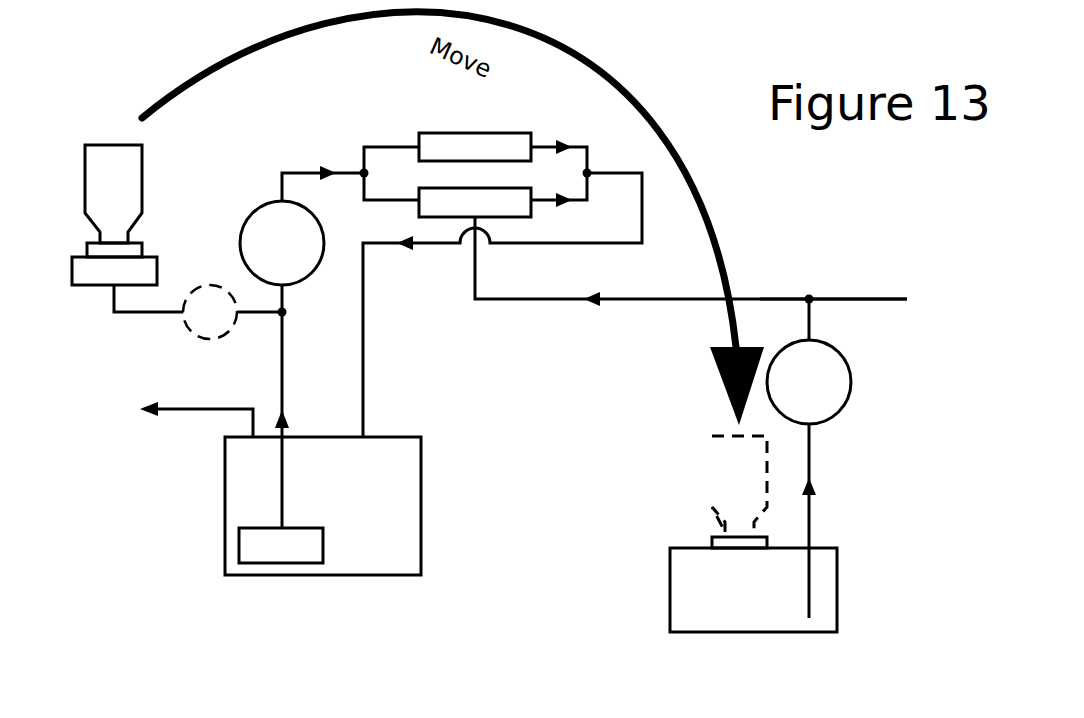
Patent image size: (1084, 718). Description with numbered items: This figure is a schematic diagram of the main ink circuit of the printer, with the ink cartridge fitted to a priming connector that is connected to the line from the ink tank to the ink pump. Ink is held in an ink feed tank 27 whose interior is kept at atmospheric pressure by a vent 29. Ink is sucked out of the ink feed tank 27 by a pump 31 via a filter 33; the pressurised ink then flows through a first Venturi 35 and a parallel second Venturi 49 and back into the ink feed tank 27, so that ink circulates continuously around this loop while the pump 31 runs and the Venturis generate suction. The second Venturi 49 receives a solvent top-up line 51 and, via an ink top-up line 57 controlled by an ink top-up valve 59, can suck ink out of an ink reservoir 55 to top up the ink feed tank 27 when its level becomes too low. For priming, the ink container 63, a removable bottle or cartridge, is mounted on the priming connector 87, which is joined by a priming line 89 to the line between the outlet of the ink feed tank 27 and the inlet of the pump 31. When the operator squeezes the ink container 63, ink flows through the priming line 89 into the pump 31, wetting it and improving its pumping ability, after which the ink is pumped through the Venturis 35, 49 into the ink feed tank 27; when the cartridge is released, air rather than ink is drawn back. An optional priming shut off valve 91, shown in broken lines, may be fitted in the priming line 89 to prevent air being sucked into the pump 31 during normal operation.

The ink container 63 is at (113, 143).
The priming connector 87 is at (84, 288).
The priming line 89 is at (142, 318).
The priming shut off valve 91 is at (212, 285).
The pump 31 is at (252, 205).
The first Venturi 35 is at (437, 132).
The second Venturi 49 is at (449, 220).
The solvent top-up line 51 is at (864, 298).
The ink top-up valve 59 is at (852, 382).
The ink top-up line 57 is at (812, 465).
The ink reservoir 55 is at (840, 575).
The ink feed tank 27 is at (423, 520).
The filter 33 is at (240, 548).
The vent 29 is at (197, 412).